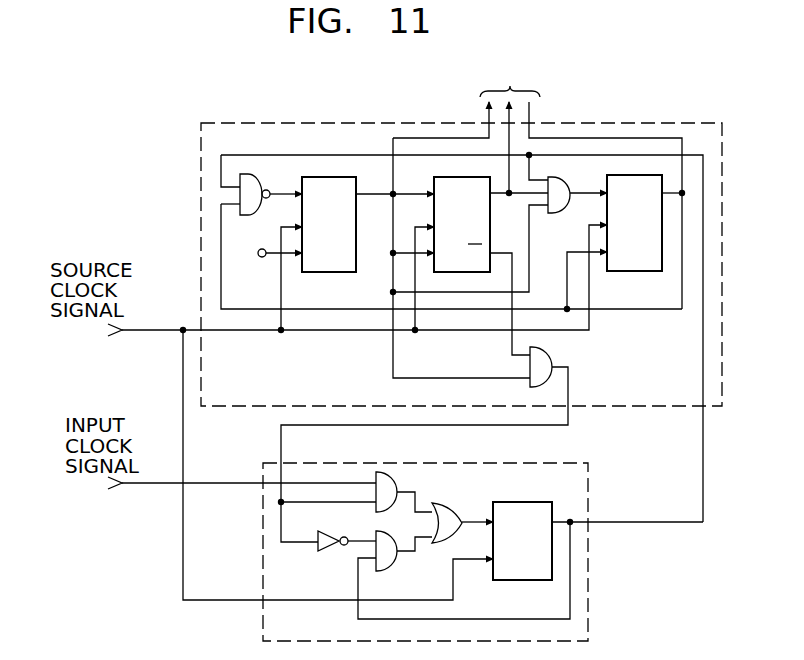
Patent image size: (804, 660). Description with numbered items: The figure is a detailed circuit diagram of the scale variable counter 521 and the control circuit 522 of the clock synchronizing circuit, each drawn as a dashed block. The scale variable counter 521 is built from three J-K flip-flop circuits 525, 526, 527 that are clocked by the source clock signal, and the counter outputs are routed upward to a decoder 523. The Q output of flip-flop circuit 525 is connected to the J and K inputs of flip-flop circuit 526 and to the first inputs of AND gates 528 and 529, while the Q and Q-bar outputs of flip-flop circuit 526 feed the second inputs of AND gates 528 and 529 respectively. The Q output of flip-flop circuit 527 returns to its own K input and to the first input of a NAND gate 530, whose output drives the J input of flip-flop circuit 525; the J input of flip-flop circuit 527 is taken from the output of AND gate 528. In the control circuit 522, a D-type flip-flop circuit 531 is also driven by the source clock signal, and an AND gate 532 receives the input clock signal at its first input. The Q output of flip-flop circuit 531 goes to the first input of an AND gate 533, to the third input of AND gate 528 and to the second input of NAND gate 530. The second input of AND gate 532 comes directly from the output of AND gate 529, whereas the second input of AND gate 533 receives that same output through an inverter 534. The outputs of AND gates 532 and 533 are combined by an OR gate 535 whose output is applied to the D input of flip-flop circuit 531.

The scale variable counter 521 is at (614, 408).
The control circuit 522 is at (591, 588).
The decoder 523 is at (524, 77).
The J-K flip-flop circuit 525 is at (323, 272).
The J-K flip-flop circuit 526 is at (448, 177).
The J-K flip-flop circuit 527 is at (630, 271).
The AND gate 528 is at (552, 178).
The AND gate 529 is at (548, 356).
The NAND gate 530 is at (253, 174).
The D-type flip-flop circuit 531 is at (520, 502).
The AND gate 532 is at (397, 485).
The AND gate 533 is at (393, 567).
The inverter 534 is at (331, 549).
The OR gate 535 is at (452, 510).